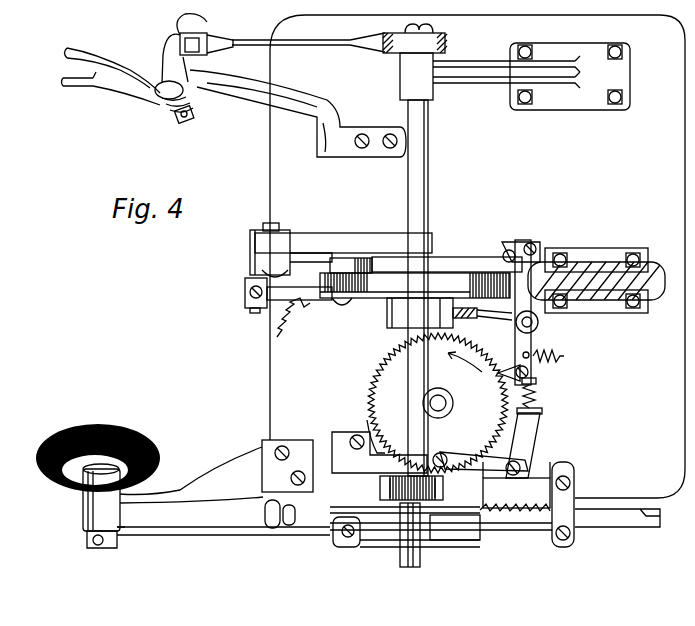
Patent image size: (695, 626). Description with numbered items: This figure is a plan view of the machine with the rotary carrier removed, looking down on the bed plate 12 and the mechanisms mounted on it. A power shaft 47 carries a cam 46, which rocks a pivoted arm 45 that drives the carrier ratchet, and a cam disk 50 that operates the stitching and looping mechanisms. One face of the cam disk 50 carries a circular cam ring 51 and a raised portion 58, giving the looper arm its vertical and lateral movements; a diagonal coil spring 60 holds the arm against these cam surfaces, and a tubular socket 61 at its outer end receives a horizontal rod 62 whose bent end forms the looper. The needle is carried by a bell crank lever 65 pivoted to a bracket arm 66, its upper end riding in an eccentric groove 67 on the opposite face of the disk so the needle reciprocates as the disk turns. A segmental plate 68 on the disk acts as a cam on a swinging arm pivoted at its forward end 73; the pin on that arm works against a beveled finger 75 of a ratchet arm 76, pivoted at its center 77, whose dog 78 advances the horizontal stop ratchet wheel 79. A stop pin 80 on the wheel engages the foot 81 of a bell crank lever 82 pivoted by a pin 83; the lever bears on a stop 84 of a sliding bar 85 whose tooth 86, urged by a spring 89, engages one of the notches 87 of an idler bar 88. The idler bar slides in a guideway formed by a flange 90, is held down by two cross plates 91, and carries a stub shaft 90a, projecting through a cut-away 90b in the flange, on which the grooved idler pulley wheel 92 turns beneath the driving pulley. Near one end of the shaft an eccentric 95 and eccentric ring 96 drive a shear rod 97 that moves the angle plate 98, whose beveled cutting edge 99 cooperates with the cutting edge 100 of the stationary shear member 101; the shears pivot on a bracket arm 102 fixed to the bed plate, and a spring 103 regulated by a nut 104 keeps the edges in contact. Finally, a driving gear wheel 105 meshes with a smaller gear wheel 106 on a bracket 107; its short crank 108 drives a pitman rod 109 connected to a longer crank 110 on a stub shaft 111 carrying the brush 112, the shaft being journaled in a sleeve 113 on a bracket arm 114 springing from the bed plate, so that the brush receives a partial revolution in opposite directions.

The bed plate 12 is at (477, 256).
The pivoted arm 45 is at (482, 320).
The cam 46 is at (388, 312).
The power shaft 47 is at (430, 181).
The cam disk 50 is at (435, 275).
The cam ring 51 is at (345, 302).
The raised portion 58 is at (481, 305).
The coil spring 60 is at (298, 318).
The tubular socket 61 is at (248, 302).
The rod 62 is at (256, 318).
The bell crank lever 65 is at (262, 238).
The bracket arm 66 is at (252, 258).
The groove 67 is at (385, 258).
The segmental plate 68 is at (340, 258).
The forward end 73 is at (590, 262).
The beveled finger 75 is at (527, 242).
The ratchet arm 76 is at (533, 340).
The center pivot 77 is at (518, 326).
The dog 78 is at (530, 375).
The stop ratchet wheel 79 is at (376, 393).
The stop pin 80 is at (445, 456).
The foot 81 is at (455, 463).
The lever 82 is at (530, 466).
The pin 83 is at (520, 468).
The stop 84 is at (542, 410).
The sliding bar 85 is at (530, 500).
The tooth 86 is at (527, 512).
The notches 87 is at (520, 512).
The idler bar 88 is at (472, 522).
The spring 89 is at (540, 395).
The flange 90 is at (475, 535).
The stub shaft 90a is at (385, 528).
The cut-away 90b is at (455, 516).
The cross plates 91 is at (325, 527).
The idler pulley wheel 92 is at (392, 545).
The eccentric 95 is at (440, 22).
The eccentric ring 96 is at (450, 40).
The shear rod 97 is at (308, 45).
The angle plate 98 is at (183, 48).
The beveled cutting edge 99 is at (110, 93).
The cutting edge 100 is at (72, 68).
The stationary shear member 101 is at (90, 82).
The bracket arm 102 is at (233, 108).
The spring 103 is at (170, 103).
The nut 104 is at (190, 120).
The driving gear wheel 105 is at (444, 490).
The smaller gear wheel 106 is at (335, 472).
The bracket 107 is at (368, 430).
The short crank 108 is at (415, 545).
The pitman rod 109 is at (223, 547).
The longer crank 110 is at (104, 544).
The stub shaft 111 is at (70, 514).
The brush 112 is at (118, 430).
The sleeve 113 is at (87, 533).
The bracket arm 114 is at (227, 478).